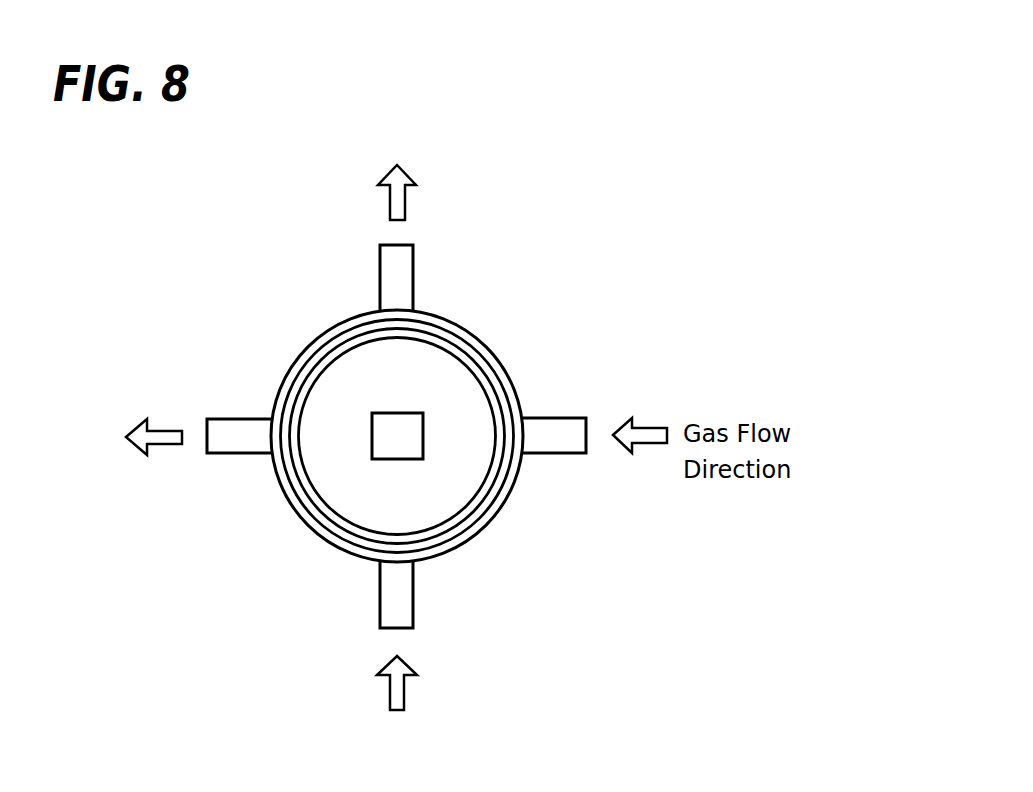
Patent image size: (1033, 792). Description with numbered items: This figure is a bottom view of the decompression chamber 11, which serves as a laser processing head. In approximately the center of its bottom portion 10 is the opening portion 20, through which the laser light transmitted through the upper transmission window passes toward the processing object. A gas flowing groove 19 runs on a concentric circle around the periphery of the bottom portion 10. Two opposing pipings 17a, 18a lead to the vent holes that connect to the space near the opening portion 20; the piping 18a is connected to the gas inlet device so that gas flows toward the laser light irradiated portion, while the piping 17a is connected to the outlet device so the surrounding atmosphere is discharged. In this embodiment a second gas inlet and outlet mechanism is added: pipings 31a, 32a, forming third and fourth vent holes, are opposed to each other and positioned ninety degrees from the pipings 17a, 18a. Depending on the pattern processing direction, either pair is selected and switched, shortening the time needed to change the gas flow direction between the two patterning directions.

The bottom portion 10 is at (457, 385).
The decompression chamber 11 is at (478, 332).
The gas flowing groove 19 is at (477, 517).
The opening portion 20 is at (405, 413).
The piping 17a is at (222, 420).
The piping 18a is at (553, 418).
The piping 31a is at (380, 275).
The piping 32a is at (379, 600).